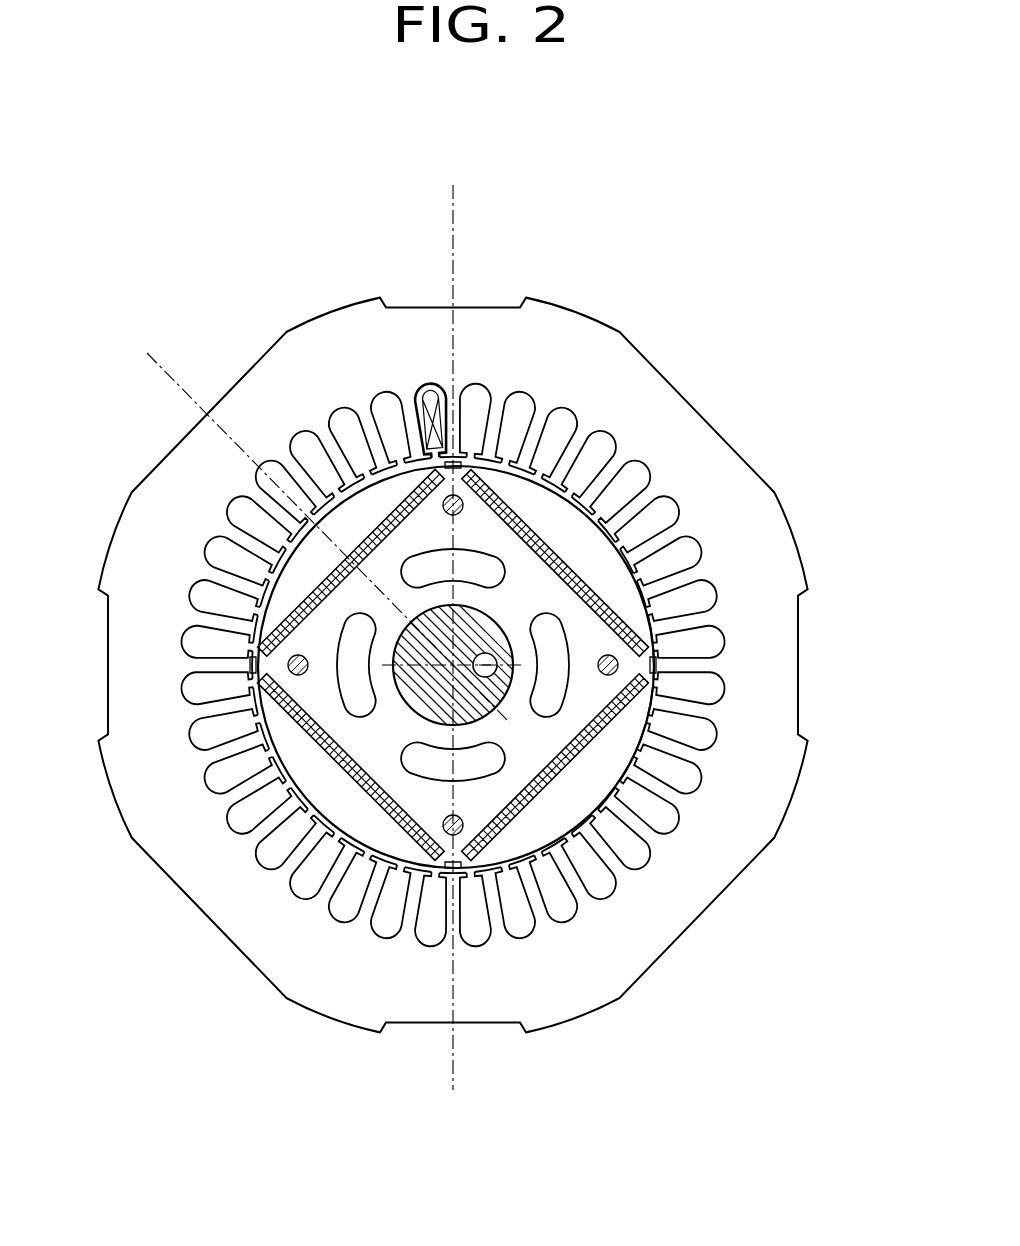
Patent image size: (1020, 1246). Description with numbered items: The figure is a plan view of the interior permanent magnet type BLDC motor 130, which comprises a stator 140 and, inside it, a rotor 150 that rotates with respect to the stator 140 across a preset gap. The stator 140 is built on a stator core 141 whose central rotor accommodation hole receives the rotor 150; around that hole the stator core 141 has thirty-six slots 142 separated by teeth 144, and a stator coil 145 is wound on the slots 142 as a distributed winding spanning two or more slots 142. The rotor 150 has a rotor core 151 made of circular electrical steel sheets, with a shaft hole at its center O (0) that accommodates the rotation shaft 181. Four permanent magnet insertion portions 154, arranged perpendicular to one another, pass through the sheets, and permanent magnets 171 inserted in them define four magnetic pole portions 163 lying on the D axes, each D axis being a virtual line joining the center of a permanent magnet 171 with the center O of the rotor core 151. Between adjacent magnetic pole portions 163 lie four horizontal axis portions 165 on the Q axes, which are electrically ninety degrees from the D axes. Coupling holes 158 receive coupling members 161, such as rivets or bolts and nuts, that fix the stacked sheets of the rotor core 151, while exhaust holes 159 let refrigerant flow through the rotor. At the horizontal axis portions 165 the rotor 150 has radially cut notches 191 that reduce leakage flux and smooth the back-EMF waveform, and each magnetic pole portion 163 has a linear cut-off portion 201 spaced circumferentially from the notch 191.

The interior permanent magnet type BLDC motor 130 is at (746, 268).
The stator 140 is at (323, 348).
The stator core 141 is at (610, 212).
The slots 142 is at (480, 392).
The teeth 144 is at (522, 460).
The stator coil 145 is at (430, 385).
The rotor 150 is at (370, 507).
The rotor core 151 is at (345, 612).
The permanent magnet insertion portions 154 is at (582, 760).
The coupling holes 158 is at (487, 472).
The exhaust holes 159 is at (562, 678).
The coupling members 161 is at (463, 505).
The magnetic pole portions 163 is at (603, 563).
The center of the rotor core 0 is at (453, 665).
The horizontal axis portions 165 is at (660, 665).
The permanent magnets 171 is at (534, 796).
The rotation shaft 181 is at (414, 706).
The notches 191 is at (463, 884).
The linear cut-off portion 201 is at (479, 867).